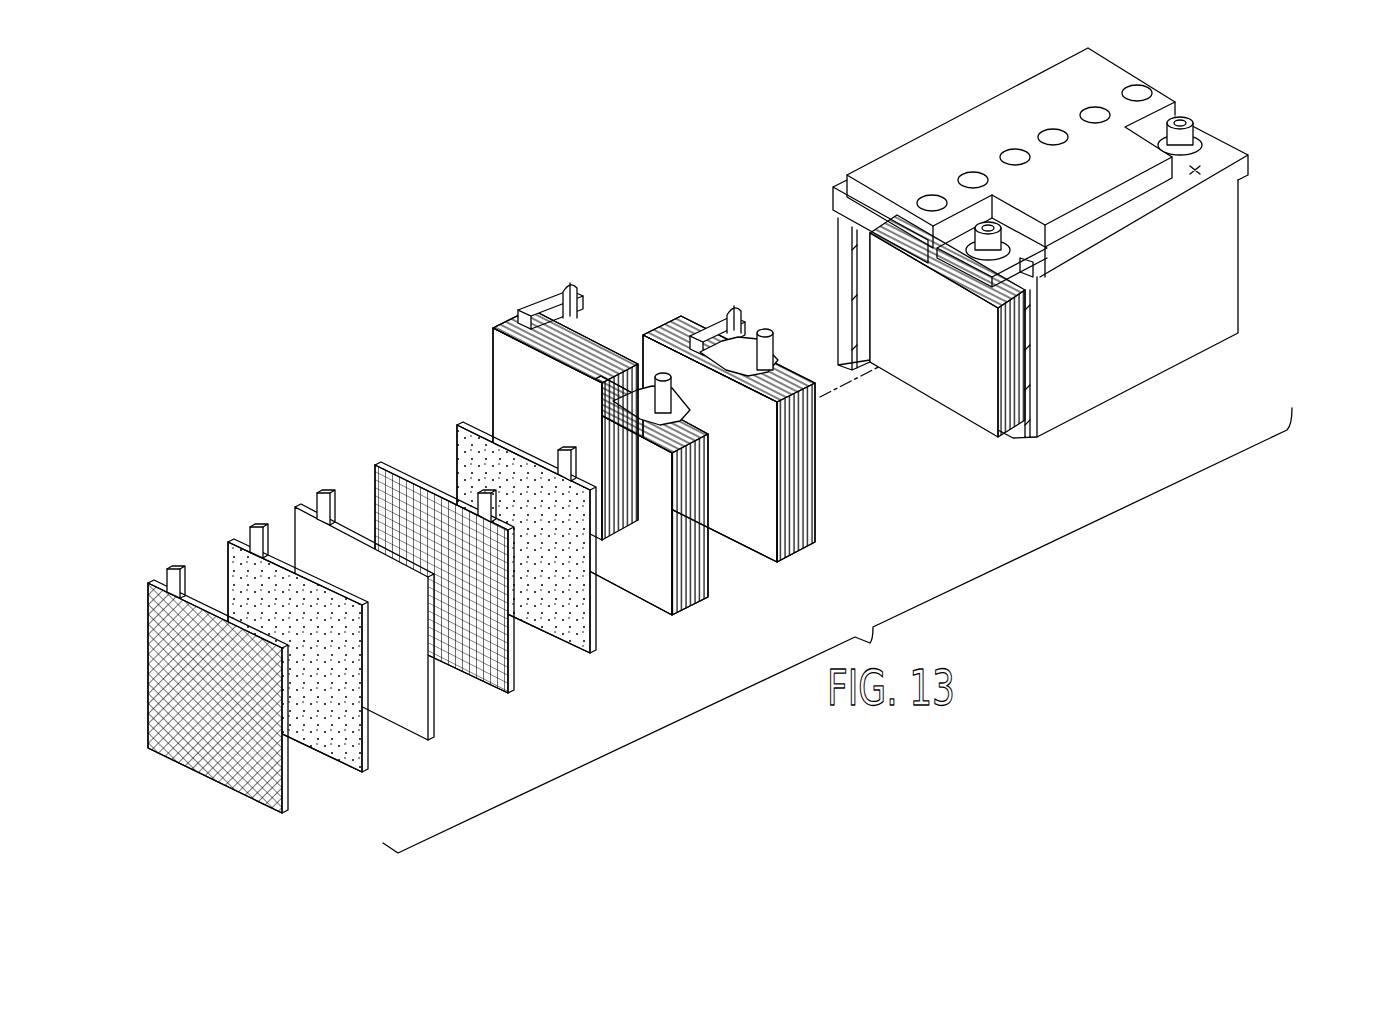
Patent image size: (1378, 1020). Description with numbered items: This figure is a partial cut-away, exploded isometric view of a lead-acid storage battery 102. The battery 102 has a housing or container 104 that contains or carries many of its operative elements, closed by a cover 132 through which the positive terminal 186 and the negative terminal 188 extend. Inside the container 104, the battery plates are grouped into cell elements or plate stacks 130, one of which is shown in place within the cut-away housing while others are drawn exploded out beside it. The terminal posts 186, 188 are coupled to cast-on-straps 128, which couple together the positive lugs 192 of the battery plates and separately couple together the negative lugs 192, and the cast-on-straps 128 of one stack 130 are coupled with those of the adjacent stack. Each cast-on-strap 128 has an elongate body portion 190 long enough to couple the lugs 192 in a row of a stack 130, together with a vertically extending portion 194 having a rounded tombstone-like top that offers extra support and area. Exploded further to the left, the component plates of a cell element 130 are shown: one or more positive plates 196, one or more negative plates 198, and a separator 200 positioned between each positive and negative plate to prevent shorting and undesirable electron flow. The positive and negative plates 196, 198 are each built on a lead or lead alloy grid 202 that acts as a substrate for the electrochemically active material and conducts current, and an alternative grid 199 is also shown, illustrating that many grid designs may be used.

The lead-acid storage battery 102 is at (1091, 247).
The housing or container 104 is at (1218, 263).
The cover 132 is at (907, 158).
The positive terminal 186 is at (1181, 127).
The negative terminal 188 is at (1012, 251).
The elongate body portion 190 is at (549, 381).
The vertically extending portion 194 is at (566, 283).
The cast-on-strap 128 is at (634, 436).
The cell element or plate stack 130 is at (710, 491).
The lug 192 is at (455, 490).
The negative plate 198 is at (460, 452).
The grid 199 is at (487, 675).
The separator 200 is at (303, 522).
The positive plate 196 is at (335, 745).
The lead or lead alloy grid 202 is at (172, 690).